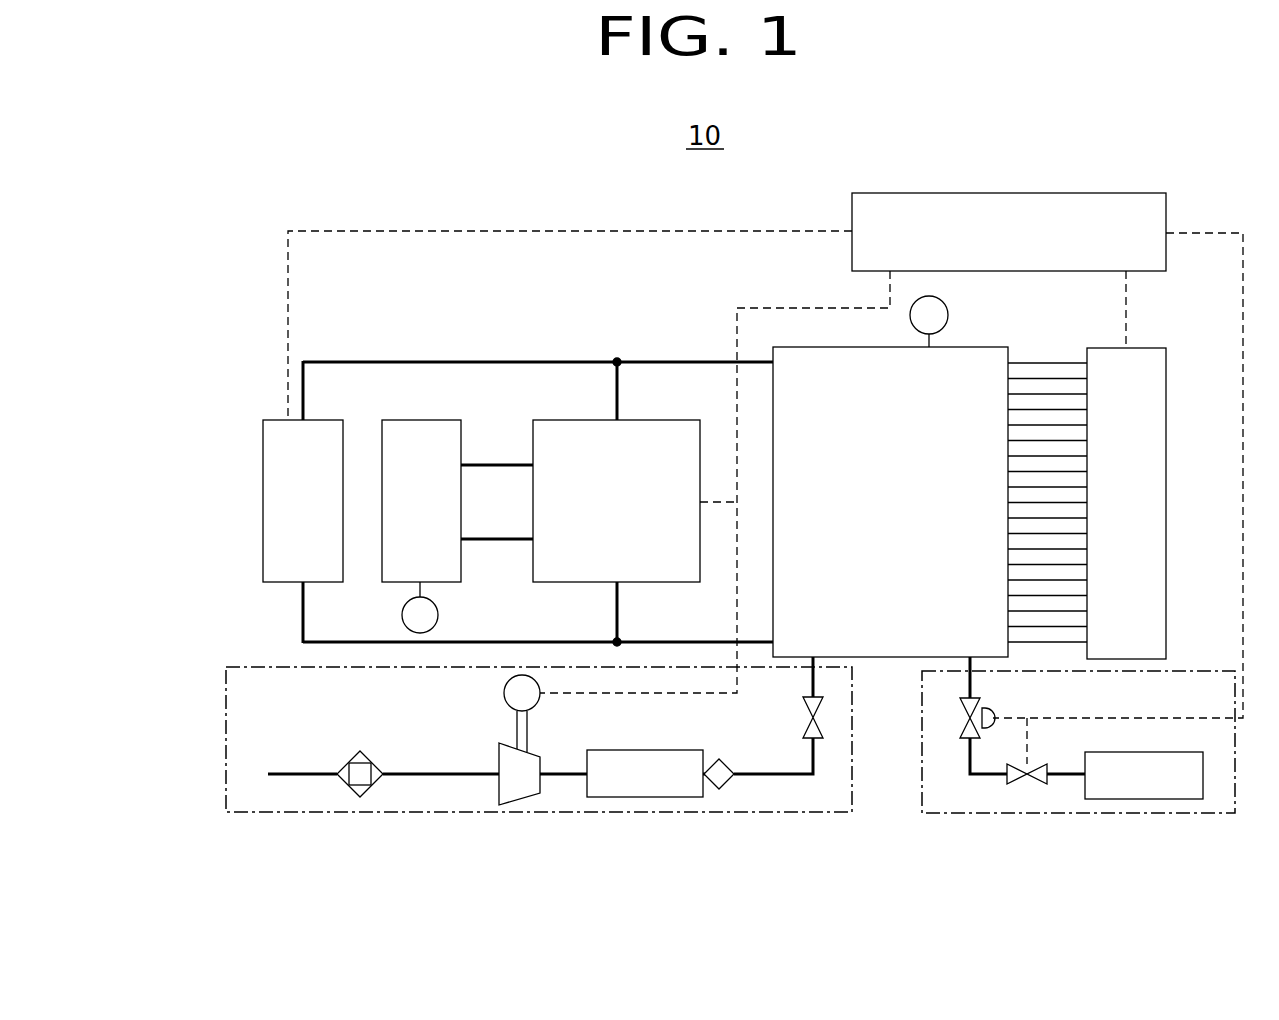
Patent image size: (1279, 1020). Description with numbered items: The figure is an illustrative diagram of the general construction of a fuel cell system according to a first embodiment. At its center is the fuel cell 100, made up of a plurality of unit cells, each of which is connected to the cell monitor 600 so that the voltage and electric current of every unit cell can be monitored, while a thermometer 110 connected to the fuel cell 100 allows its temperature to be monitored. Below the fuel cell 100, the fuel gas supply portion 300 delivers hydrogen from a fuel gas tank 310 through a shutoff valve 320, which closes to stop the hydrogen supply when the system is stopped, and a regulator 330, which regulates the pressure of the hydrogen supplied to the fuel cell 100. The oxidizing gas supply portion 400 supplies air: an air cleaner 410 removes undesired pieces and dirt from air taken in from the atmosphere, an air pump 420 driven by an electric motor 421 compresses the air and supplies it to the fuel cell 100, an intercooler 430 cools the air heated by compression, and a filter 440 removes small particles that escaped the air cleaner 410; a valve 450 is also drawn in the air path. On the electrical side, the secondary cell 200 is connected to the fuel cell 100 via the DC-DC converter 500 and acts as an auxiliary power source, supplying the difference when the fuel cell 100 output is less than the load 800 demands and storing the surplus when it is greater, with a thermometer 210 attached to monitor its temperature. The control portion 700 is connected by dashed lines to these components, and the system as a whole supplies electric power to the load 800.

The fuel cell 100 is at (1010, 357).
The thermometer 110 is at (948, 315).
The secondary cell 200 is at (420, 420).
The thermometer 210 is at (438, 614).
The fuel gas supply portion 300 is at (973, 813).
The fuel gas tank 310 is at (1173, 799).
The shutoff valve 320 is at (1023, 785).
The regulator 330 is at (965, 740).
The oxidizing gas supply portion 400 is at (285, 812).
The air cleaner 410 is at (365, 792).
The air pump 420 is at (517, 805).
The electric motor 421 is at (504, 693).
The intercooler 430 is at (615, 797).
The filter 440 is at (718, 790).
The back pressure valve 450 is at (815, 740).
The DC-DC converter 500 is at (582, 420).
The cell monitor 600 is at (1135, 348).
The control portion 700 is at (1150, 172).
The load 800 is at (263, 434).